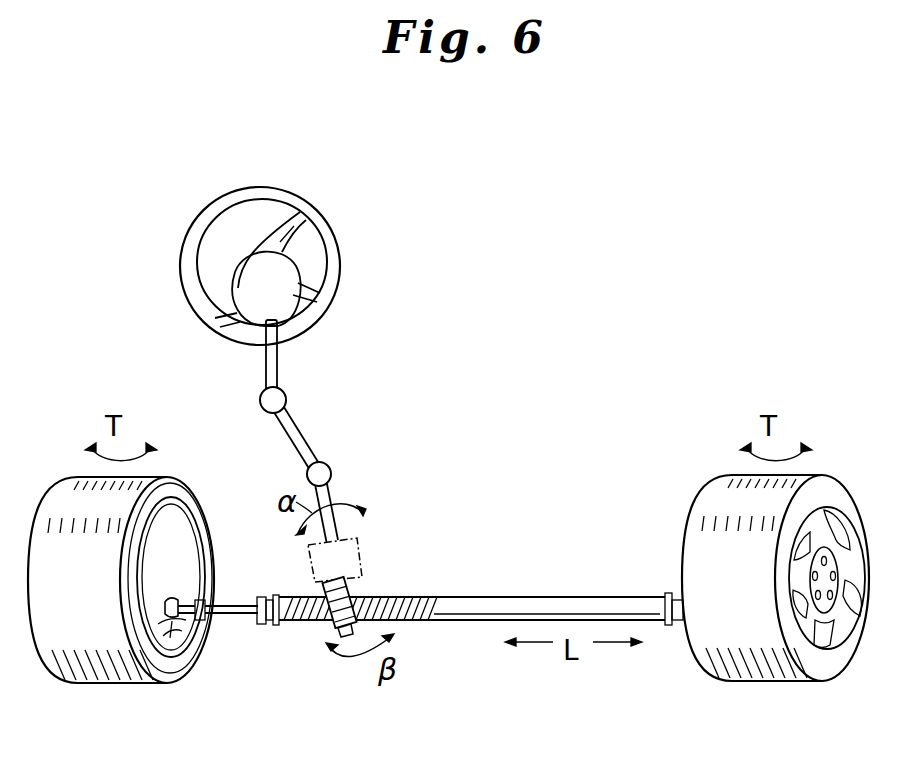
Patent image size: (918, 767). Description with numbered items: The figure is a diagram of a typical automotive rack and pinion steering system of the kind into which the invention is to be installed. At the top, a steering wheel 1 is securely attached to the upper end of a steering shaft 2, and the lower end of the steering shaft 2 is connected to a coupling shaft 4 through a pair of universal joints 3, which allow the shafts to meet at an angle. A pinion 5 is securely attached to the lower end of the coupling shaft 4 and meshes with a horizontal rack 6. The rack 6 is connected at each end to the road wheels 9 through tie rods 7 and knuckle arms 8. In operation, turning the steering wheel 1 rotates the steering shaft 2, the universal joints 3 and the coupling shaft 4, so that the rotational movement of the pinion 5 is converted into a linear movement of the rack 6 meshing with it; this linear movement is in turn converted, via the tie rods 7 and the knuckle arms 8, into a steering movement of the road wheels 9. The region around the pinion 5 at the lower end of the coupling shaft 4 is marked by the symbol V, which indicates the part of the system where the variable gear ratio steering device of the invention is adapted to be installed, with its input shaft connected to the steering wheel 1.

The steering wheel 1 is at (325, 222).
The steering shaft 2 is at (280, 355).
The universal joints 3 is at (288, 398).
The coupling shaft 4 is at (292, 448).
The pinion 5 is at (345, 628).
The rack 6 is at (430, 622).
The tie rods 7 is at (192, 625).
The knuckle arms 8 is at (172, 637).
The road wheels 9 is at (113, 683).
The installation part for variable gear ratio steering device V is at (362, 558).